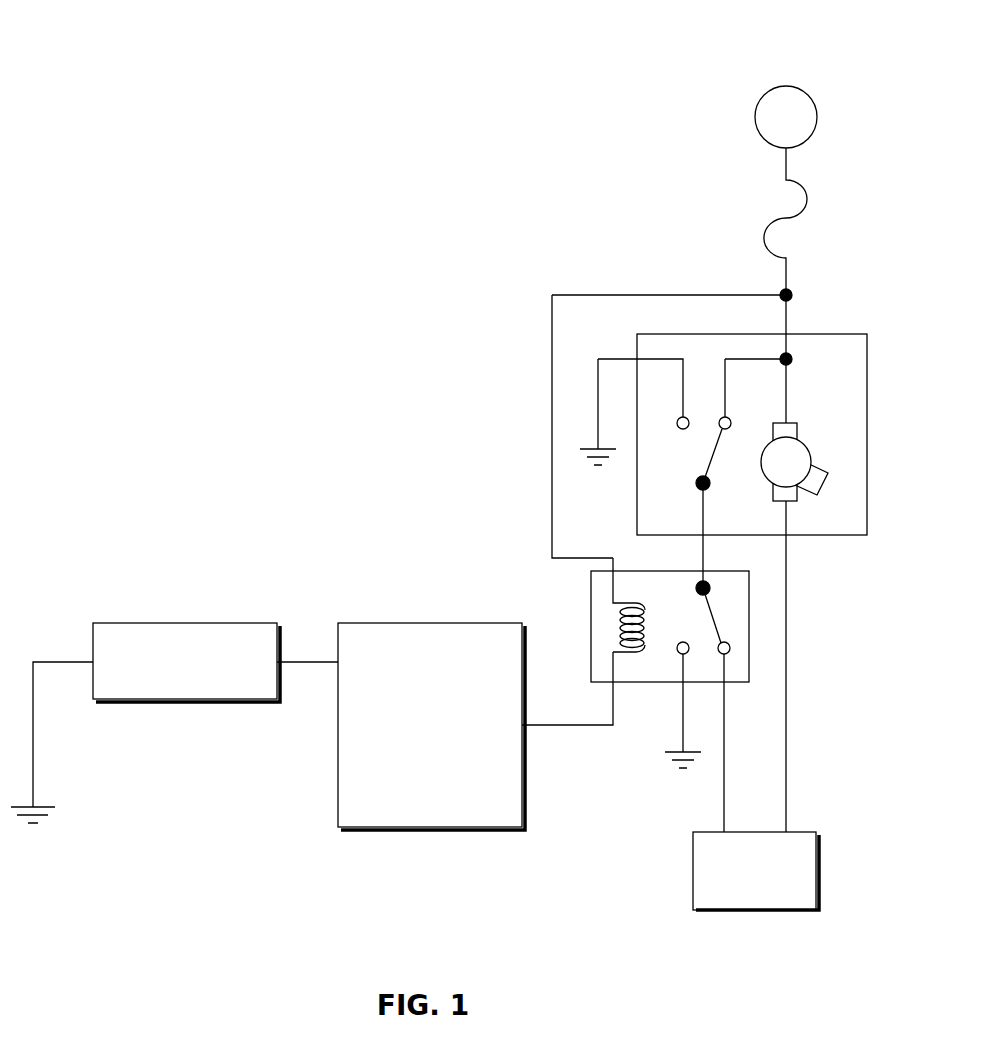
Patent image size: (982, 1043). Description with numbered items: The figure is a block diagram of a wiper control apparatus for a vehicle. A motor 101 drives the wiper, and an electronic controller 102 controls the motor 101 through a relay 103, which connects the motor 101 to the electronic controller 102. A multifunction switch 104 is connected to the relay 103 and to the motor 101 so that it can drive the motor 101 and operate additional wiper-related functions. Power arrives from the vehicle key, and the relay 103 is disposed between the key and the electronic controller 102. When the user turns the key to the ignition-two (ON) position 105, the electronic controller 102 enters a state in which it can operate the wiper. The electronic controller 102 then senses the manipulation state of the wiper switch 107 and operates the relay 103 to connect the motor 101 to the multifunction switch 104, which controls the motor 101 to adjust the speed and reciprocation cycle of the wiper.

The motor 101 is at (835, 333).
The electronic controller 102 is at (490, 622).
The relay 103 is at (749, 624).
The multifunction switch 104 is at (819, 869).
The ignition-2 position 105 is at (786, 84).
The wiper switch 107 is at (233, 622).